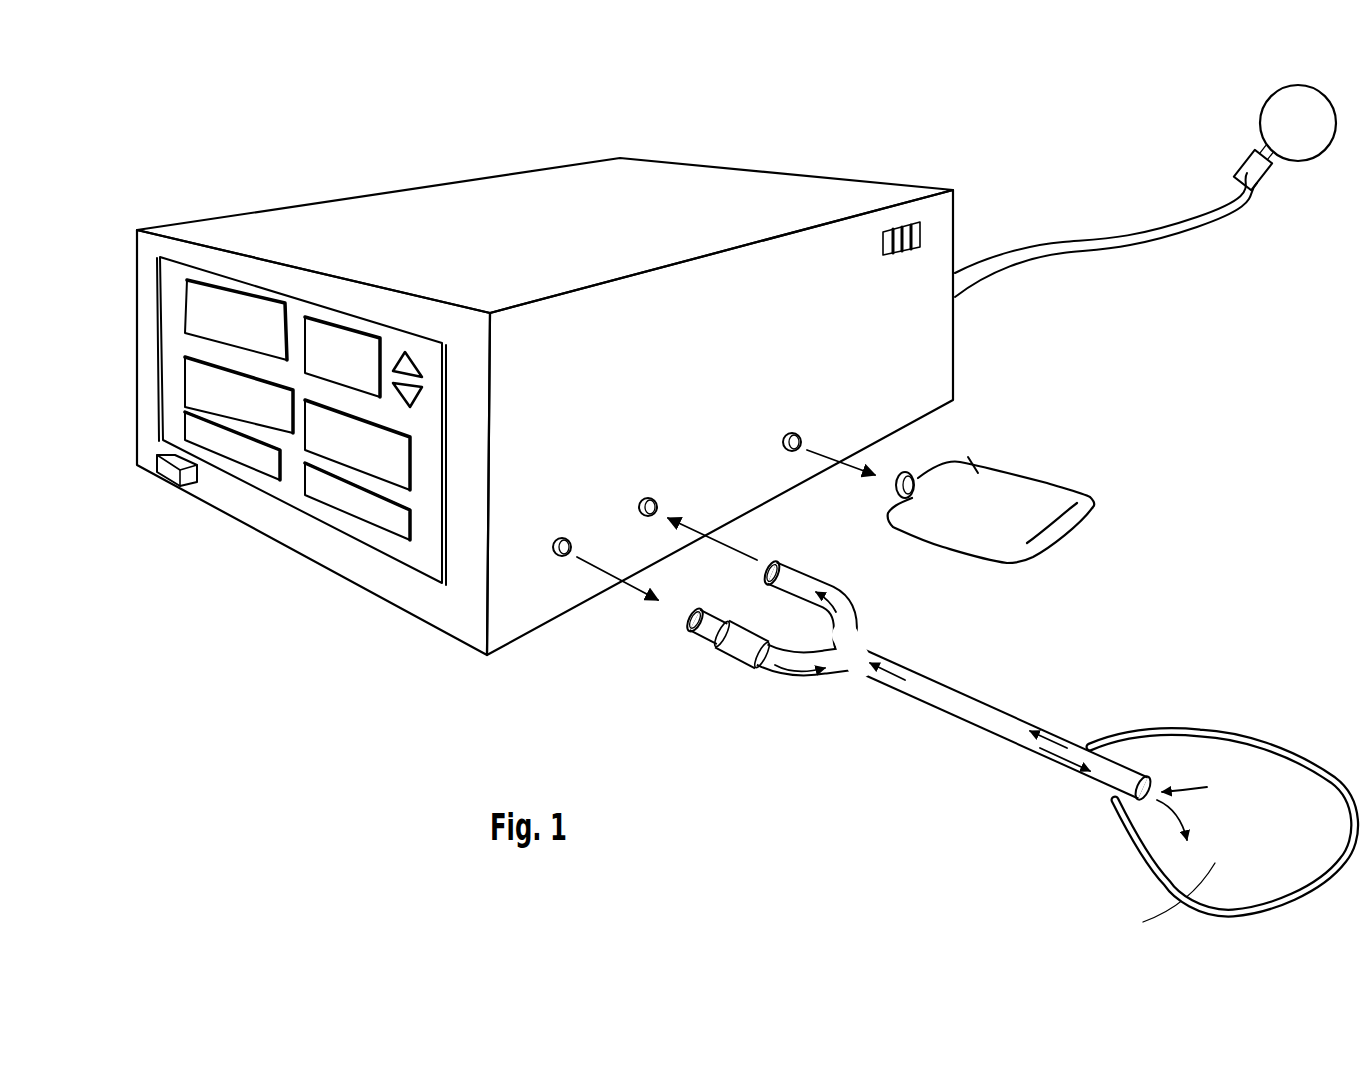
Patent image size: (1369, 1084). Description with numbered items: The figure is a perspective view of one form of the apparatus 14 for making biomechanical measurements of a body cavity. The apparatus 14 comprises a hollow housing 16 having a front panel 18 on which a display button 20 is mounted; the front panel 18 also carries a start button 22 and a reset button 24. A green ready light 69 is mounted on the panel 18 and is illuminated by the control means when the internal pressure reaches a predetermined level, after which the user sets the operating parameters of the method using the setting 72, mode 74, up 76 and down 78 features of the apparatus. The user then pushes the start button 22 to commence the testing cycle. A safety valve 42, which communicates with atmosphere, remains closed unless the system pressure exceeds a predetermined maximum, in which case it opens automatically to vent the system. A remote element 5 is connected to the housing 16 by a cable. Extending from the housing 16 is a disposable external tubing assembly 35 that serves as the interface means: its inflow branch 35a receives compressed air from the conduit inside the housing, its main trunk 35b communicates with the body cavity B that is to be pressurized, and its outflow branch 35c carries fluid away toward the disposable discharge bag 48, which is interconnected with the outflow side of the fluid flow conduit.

The apparatus 14 is at (428, 160).
The hollow housing 16 is at (355, 213).
The front panel 18 is at (180, 343).
The display button 20 is at (245, 312).
The ready light 69 is at (342, 327).
The up feature 76 is at (412, 362).
The down feature 78 is at (430, 392).
The setting feature 72 is at (183, 373).
The mode feature 74 is at (183, 420).
The start button 22 is at (398, 462).
The reset button 24 is at (393, 522).
The safety valve 42 is at (163, 478).
The foot pedal / remote bulb 5 is at (1285, 85).
The disposable discharge bag 48 is at (1036, 508).
The disposable external tubing assembly 35 is at (952, 673).
The inflow branch 35a is at (807, 575).
The main trunk 35b is at (972, 720).
The outflow branch 35c is at (763, 670).
The body cavity B is at (1247, 810).